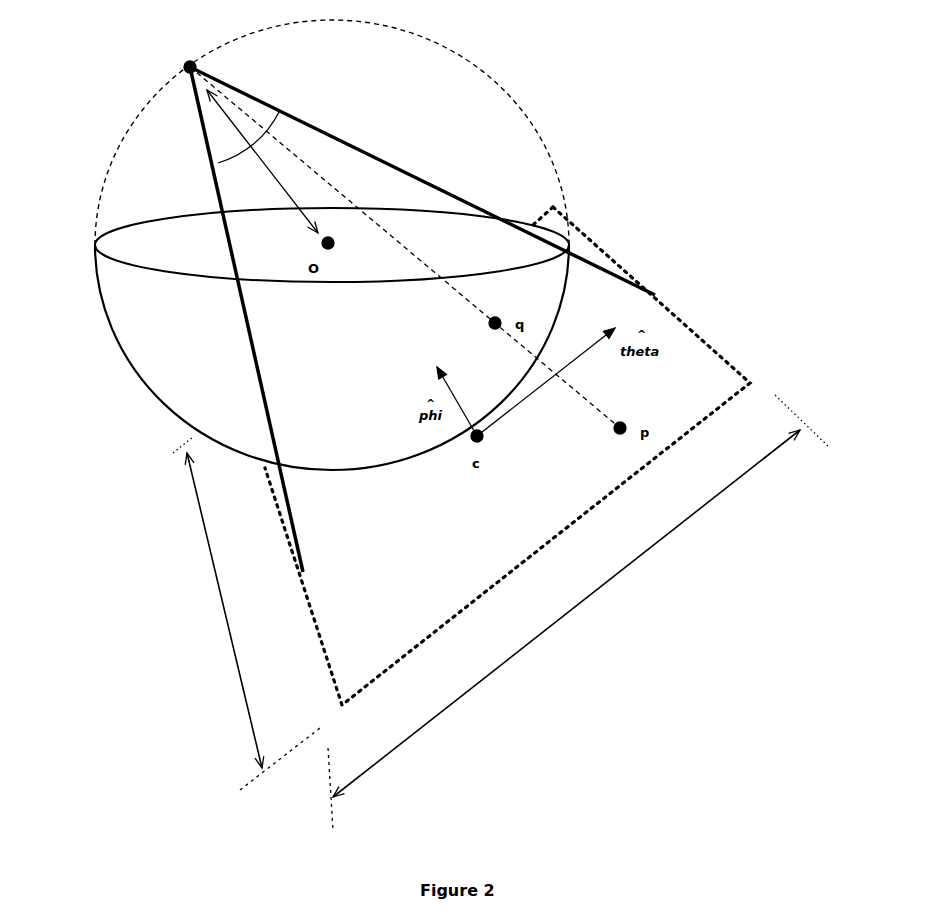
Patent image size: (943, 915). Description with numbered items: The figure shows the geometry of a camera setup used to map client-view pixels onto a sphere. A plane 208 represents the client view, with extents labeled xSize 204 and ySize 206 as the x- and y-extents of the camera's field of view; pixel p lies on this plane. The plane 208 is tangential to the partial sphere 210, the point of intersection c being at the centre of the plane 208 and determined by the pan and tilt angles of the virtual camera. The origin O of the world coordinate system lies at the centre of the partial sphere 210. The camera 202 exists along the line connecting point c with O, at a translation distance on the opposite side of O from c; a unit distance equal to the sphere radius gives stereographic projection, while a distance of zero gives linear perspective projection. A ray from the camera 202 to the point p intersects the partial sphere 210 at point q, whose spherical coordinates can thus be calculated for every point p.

The camera 202 is at (383, 291).
The xSize 204 is at (579, 612).
The ySize 206 is at (210, 613).
The plane 208 is at (705, 340).
The partial sphere 210 is at (146, 388).